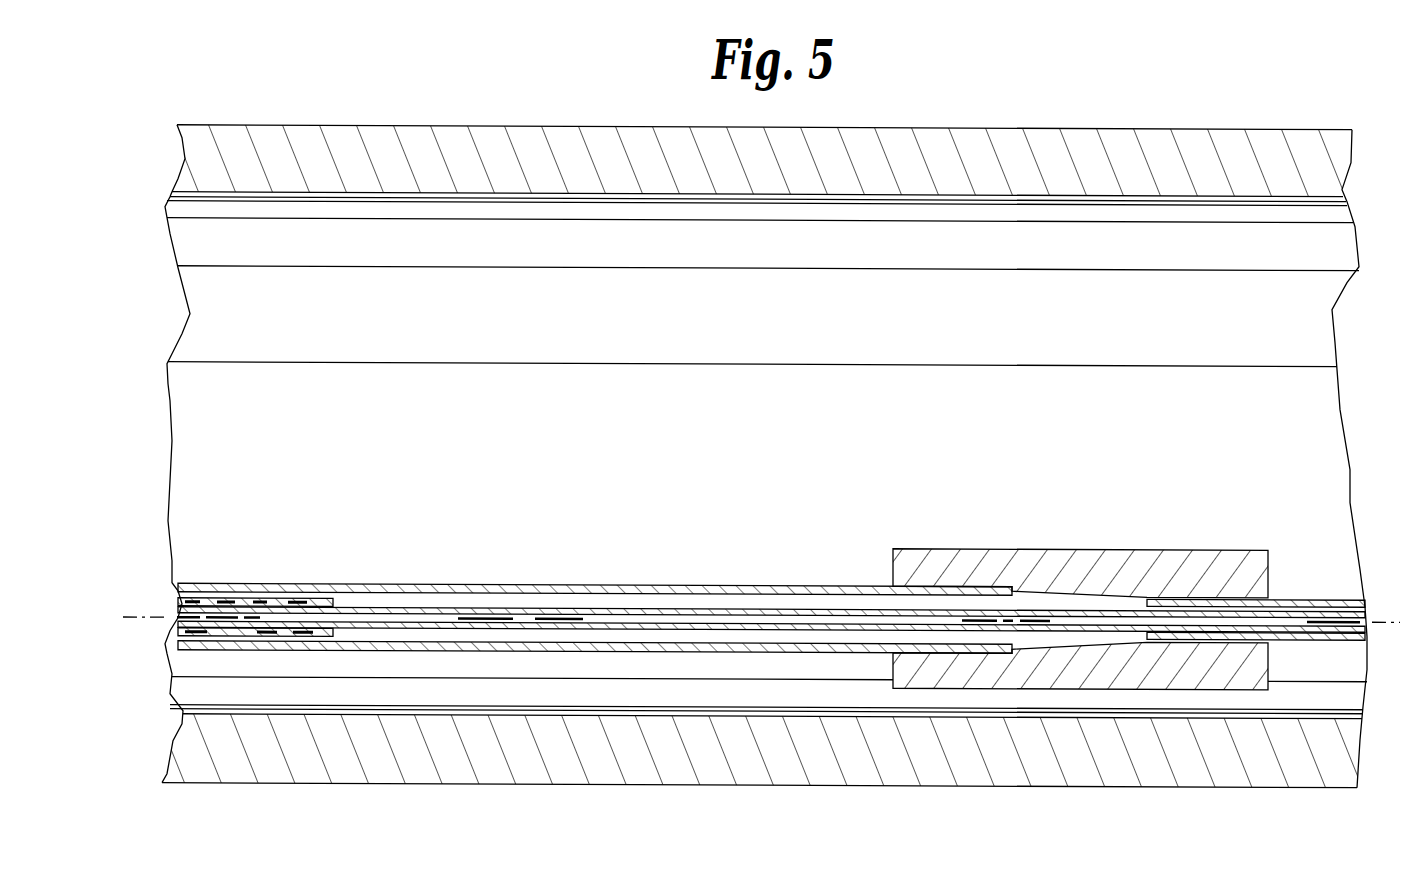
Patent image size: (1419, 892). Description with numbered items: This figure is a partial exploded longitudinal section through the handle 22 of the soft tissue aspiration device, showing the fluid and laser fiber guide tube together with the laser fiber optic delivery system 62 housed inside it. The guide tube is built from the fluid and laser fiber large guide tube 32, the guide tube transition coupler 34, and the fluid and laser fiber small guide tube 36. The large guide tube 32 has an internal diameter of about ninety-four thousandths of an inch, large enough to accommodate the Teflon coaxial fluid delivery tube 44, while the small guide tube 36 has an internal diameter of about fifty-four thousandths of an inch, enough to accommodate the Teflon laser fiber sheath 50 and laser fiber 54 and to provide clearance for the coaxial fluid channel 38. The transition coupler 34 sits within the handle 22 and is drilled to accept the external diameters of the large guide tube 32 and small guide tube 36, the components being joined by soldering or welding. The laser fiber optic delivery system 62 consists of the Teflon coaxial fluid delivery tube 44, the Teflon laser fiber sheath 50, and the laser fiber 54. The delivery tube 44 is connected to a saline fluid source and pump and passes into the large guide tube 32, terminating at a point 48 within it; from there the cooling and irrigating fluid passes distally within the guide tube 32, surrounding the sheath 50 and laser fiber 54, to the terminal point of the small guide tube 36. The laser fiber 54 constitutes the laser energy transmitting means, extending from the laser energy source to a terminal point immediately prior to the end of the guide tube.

The handle 22 is at (762, 783).
The fluid and laser fiber large guide tube 32 is at (565, 650).
The guide tube transition coupler 34 is at (977, 686).
The fluid and laser fiber small guide tube 36 is at (1313, 635).
The coaxial fluid channel 38 is at (315, 627).
The Teflon coaxial fluid delivery tube 44 is at (250, 595).
The terminal point of the coaxial fluid delivery tube 48 is at (337, 597).
The Teflon laser fiber sheath 50 is at (452, 605).
The laser fiber 54 is at (523, 615).
The laser fiber optic delivery system 62 is at (218, 631).